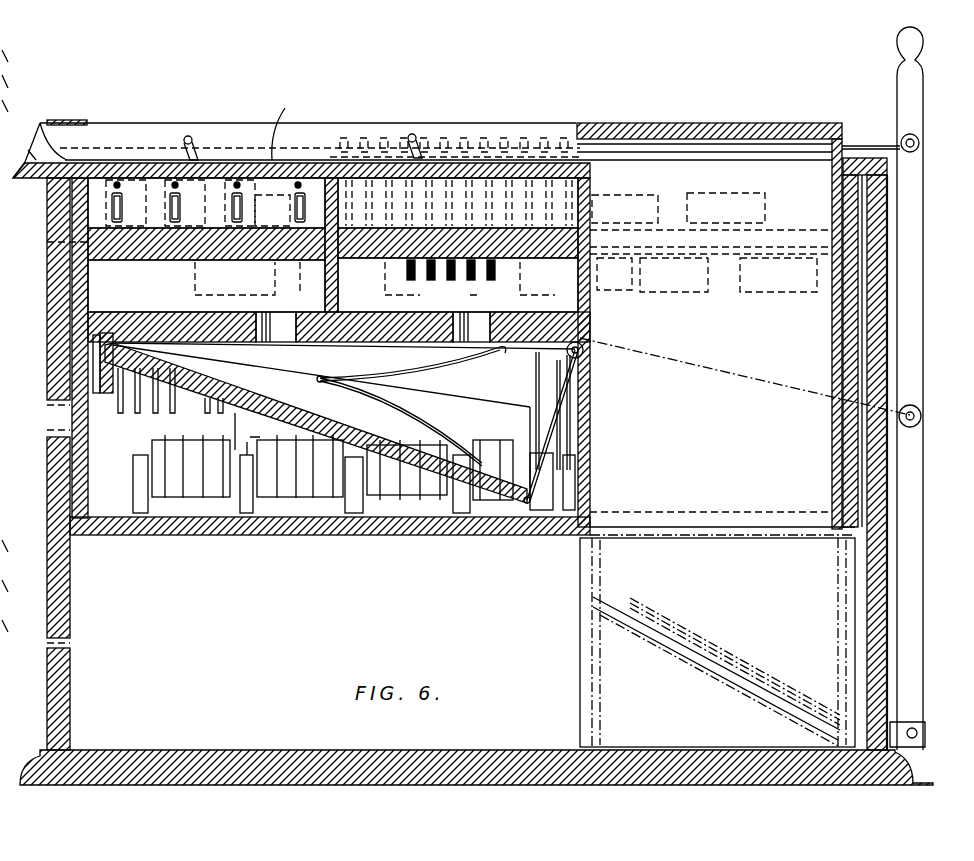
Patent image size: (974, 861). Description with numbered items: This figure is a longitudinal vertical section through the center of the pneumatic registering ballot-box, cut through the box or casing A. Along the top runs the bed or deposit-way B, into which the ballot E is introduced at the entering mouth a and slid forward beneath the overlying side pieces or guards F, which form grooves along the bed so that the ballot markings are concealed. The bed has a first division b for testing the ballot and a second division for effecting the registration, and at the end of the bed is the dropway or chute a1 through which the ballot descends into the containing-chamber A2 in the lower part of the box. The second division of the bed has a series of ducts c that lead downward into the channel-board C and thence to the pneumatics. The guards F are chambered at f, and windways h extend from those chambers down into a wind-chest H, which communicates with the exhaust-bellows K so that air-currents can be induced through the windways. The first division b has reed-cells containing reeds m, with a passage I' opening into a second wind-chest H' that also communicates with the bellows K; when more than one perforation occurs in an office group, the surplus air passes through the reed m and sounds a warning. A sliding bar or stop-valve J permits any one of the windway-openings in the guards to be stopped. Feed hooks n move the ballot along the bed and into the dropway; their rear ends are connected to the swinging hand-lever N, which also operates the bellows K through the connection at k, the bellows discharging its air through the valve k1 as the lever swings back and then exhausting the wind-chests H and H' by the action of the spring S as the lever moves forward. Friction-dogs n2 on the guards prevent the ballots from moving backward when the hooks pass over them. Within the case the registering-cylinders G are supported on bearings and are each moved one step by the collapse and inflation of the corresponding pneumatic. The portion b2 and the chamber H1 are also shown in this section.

The box or casing A is at (47, 358).
The overlying side pieces or guards F is at (433, 326).
The entering mouth a is at (22, 150).
The sliding bar or stop-valve J is at (71, 108).
The first division of the bed b is at (174, 100).
The bed or deposit-way B is at (281, 124).
The lid portion b2 is at (460, 100).
The stops or friction-dogs n2 is at (408, 110).
The chambers of the guards f is at (490, 142).
The feed devices or hooks n is at (858, 146).
The swinging hand-lever N is at (923, 340).
The bellows connection to lever k is at (921, 416).
The channel-board C is at (318, 352).
The passage from reed-cell I' is at (203, 201).
The reeds m is at (208, 208).
The wind-chest H' is at (272, 207).
The ducts c is at (459, 203).
The chamber H1 is at (247, 283).
The windways h is at (452, 280).
The wind-chest H is at (523, 284).
The dropway or chute a1 is at (722, 364).
The exhaust-bellows K is at (338, 421).
The valve k1 is at (190, 411).
The spring S is at (411, 406).
The registering-cylinders G is at (343, 474).
The containing-chamber A2 is at (717, 642).
The ballot E is at (740, 675).